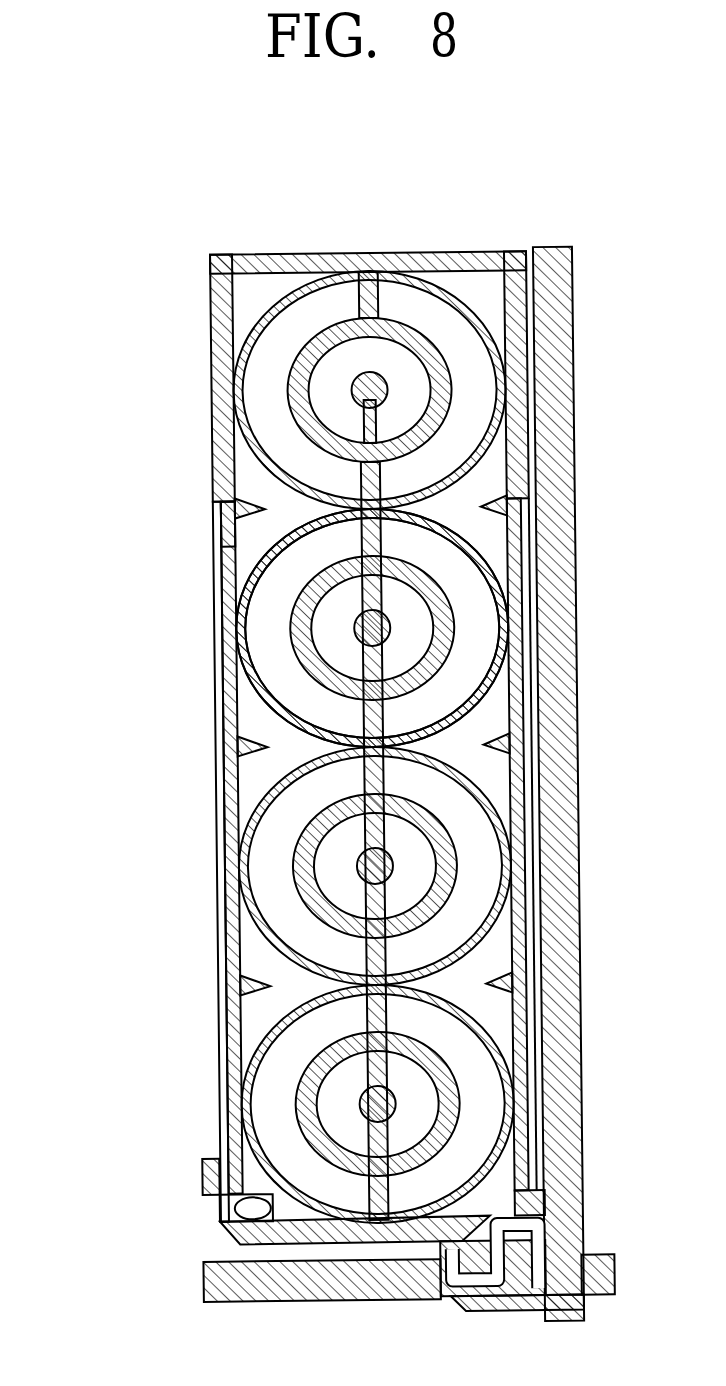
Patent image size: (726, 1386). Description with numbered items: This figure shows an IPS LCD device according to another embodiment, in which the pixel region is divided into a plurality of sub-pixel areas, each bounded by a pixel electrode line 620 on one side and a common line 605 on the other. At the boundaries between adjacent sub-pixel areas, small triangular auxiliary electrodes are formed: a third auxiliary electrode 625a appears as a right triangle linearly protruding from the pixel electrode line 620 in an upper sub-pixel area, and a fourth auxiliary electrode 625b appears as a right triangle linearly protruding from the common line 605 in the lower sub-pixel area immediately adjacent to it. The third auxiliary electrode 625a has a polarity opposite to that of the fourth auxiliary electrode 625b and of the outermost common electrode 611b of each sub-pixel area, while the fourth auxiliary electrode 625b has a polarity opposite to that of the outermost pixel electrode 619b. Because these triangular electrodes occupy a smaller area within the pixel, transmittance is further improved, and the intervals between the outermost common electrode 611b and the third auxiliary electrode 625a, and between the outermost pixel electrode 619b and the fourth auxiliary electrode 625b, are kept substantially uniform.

The outermost common electrode 611b is at (260, 469).
The outermost pixel electrode 619b is at (240, 602).
The third auxiliary electrode 625a is at (253, 509).
The fourth auxiliary electrode 625b is at (227, 528).
The common line 605 is at (225, 703).
The pixel electrode line 620 is at (230, 833).